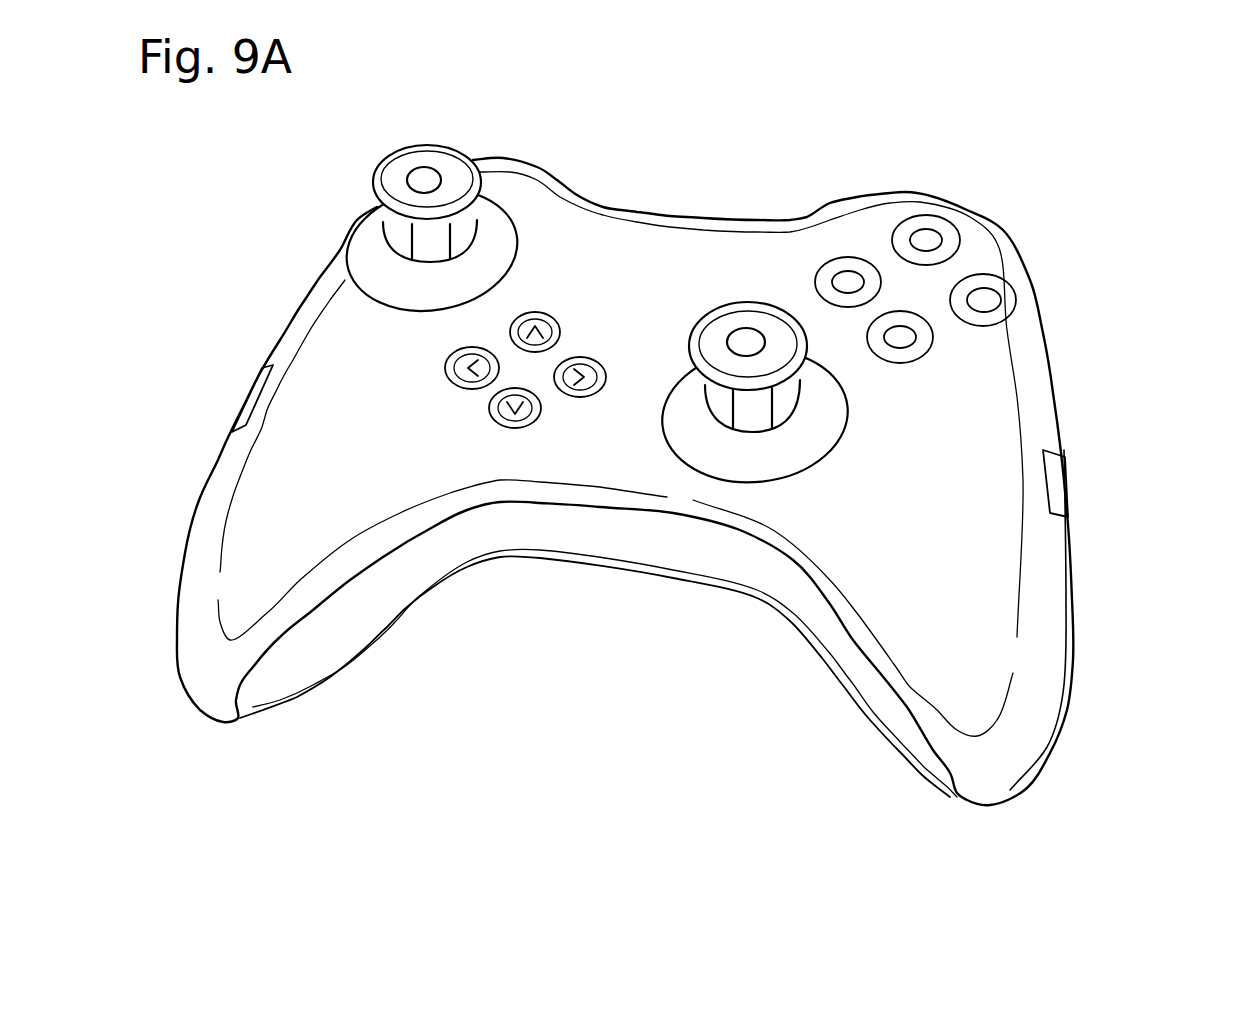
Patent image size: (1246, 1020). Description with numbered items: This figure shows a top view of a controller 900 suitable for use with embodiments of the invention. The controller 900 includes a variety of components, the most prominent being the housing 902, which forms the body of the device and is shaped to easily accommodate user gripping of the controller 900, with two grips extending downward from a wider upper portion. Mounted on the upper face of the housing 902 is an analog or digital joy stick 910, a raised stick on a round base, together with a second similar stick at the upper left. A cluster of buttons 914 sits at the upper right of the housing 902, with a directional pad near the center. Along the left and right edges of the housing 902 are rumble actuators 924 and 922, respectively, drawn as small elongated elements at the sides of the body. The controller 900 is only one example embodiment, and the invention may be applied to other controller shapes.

The controller 900 is at (737, 733).
The housing 902 is at (1055, 395).
The joy stick 910 is at (698, 327).
The button 914 is at (930, 227).
The rumble actuator 922 is at (1063, 500).
The rumble actuator 924 is at (243, 410).